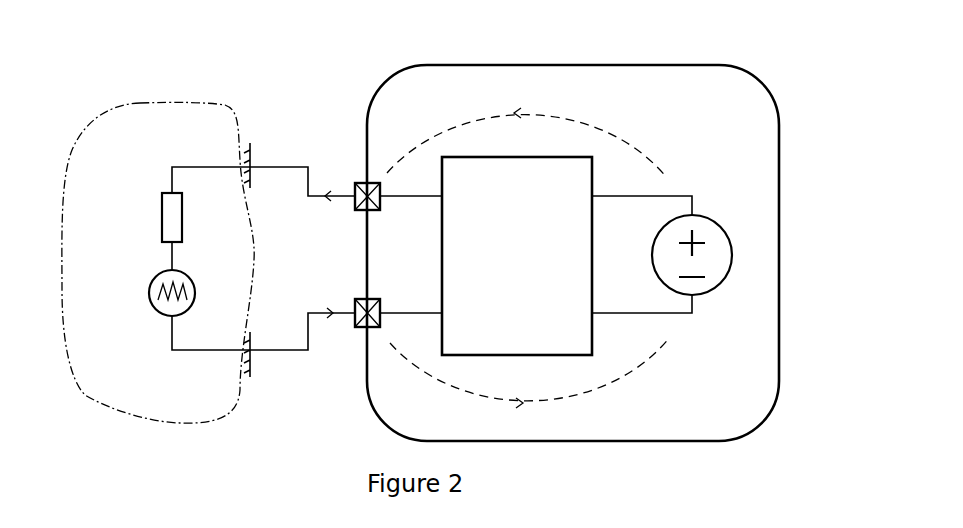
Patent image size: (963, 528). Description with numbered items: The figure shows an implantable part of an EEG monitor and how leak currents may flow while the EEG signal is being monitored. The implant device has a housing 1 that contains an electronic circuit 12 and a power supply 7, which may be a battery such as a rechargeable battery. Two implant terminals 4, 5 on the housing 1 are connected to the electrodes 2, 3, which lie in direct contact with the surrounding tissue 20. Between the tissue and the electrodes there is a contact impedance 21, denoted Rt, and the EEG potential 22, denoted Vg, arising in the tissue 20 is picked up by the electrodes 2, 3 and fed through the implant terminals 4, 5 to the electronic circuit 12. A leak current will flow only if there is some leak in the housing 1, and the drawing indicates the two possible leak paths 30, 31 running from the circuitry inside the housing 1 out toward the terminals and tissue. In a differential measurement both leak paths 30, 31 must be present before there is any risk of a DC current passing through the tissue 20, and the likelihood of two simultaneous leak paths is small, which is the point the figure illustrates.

The housing 1 is at (632, 65).
The electrode 2 is at (250, 150).
The electrode 3 is at (250, 363).
The implant terminal 4 is at (353, 185).
The implant terminal 5 is at (357, 328).
The power supply 7 is at (722, 287).
The electronic circuit 12 is at (570, 155).
The tissue 20 is at (95, 147).
The contact impedance 21 is at (162, 232).
The EEG potential 22 is at (162, 315).
The leak path 30 is at (463, 118).
The leak path 31 is at (542, 404).